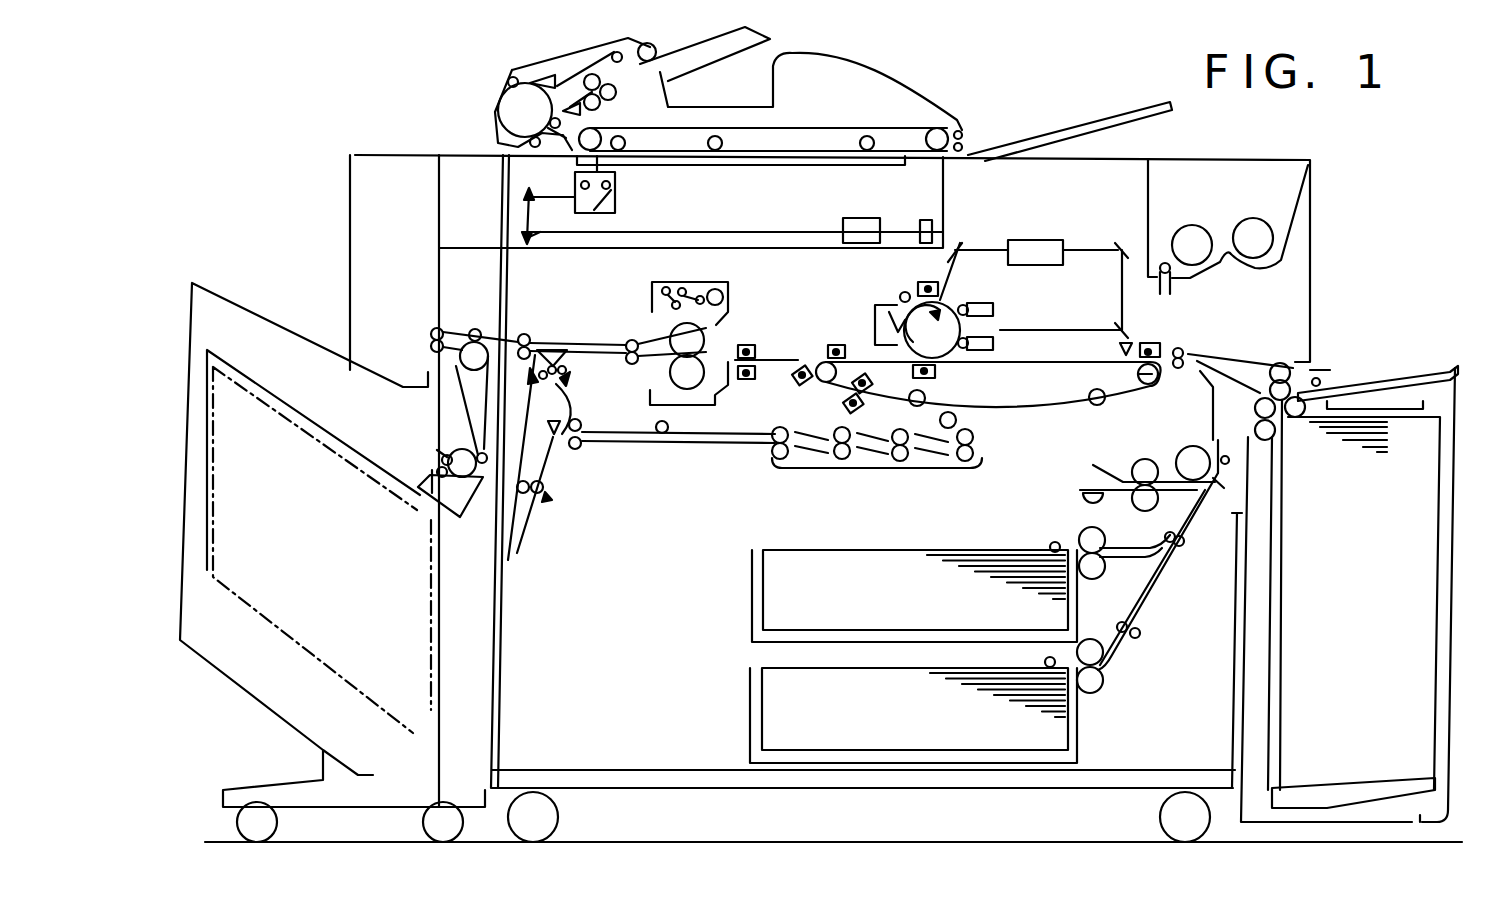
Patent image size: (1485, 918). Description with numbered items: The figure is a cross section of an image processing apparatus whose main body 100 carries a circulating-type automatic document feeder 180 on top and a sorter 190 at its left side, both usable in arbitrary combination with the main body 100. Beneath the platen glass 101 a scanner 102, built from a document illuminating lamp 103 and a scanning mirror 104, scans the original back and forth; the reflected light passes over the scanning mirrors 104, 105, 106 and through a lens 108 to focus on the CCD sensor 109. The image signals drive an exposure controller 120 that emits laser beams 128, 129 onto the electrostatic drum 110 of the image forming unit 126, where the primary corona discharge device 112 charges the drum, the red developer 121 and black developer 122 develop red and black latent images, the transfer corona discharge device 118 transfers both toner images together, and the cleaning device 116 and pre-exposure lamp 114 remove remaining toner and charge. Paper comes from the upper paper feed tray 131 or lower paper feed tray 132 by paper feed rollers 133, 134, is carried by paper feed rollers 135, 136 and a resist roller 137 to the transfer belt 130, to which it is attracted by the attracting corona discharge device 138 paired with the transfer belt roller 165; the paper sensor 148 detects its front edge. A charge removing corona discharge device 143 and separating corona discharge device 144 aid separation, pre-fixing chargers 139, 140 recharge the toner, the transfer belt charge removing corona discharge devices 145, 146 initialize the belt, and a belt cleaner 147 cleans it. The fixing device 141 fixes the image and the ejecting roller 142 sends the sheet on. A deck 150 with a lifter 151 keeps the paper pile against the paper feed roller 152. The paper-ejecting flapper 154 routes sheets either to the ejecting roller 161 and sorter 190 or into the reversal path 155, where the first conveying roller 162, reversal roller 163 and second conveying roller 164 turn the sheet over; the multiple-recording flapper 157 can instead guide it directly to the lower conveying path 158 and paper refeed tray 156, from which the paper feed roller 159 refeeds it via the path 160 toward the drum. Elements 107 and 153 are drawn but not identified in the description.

The main body of the image processing apparatus 100 is at (1309, 194).
The platen glass 101 is at (745, 166).
The scanner 102 is at (617, 195).
The document illuminating lamp 103 is at (612, 183).
The scanning mirror 104 is at (600, 208).
The scanning mirror 105 is at (528, 196).
The scanning mirror 106 is at (528, 240).
The optical system 107 is at (726, 232).
The lens 108 is at (862, 218).
The CCD sensor 109 is at (922, 220).
The electrostatic drum 110 is at (952, 303).
The primary corona discharge device 112 is at (924, 283).
The pre-exposure lamp 114 is at (900, 296).
The cleaning device 116 is at (874, 312).
The transfer corona discharge device 118 is at (937, 372).
The exposure controller 120 is at (1037, 240).
The red developer 121 is at (994, 306).
The black developer 122 is at (994, 344).
The image forming unit 126 is at (932, 330).
The laser beam 128 is at (1119, 242).
The laser beam 129 is at (968, 246).
The transfer belt 130 is at (972, 410).
The upper paper feed tray 131 is at (788, 520).
The lower paper feed tray 132 is at (1062, 735).
The paper feed roller 133 is at (1055, 542).
The paper feed roller 134 is at (1050, 657).
The paper feed roller 135 is at (1100, 533).
The paper feed roller 136 is at (1102, 640).
The resist roller 137 is at (1178, 369).
The attracting corona discharge device 138 is at (1161, 349).
The pre-fixing charger 139 is at (755, 346).
The pre-fixing charger 140 is at (747, 382).
The fixing device 141 is at (670, 283).
The ejecting roller 142 is at (583, 350).
The charge removing corona discharge device 143 is at (828, 346).
The separating corona discharge device 144 is at (806, 385).
The transfer belt charge removing corona discharge device 145 is at (862, 372).
The transfer belt charge removing corona discharge device 146 is at (862, 406).
The belt cleaner 147 is at (976, 446).
The paper sensor 148 is at (1128, 344).
The deck 150 is at (1445, 370).
The lifter 151 is at (1340, 800).
The paper feed roller 152 is at (1299, 425).
The manual feed tray 153 is at (1385, 385).
The paper-ejecting flapper 154 is at (560, 348).
The reversal path 155 is at (524, 548).
The paper refeed tray 156 is at (1065, 485).
The multiple-recording flapper 157 is at (569, 424).
The lower conveying path 158 is at (980, 482).
The paper feed roller 159 is at (1176, 455).
The path 160 is at (1214, 426).
The ejecting roller 161 is at (527, 333).
The first conveying roller 162 is at (568, 374).
The reversal roller 163 is at (545, 485).
The second conveying roller 164 is at (540, 385).
The transfer belt roller 165 is at (1126, 377).
The circulating-type automatic document feeder 180 is at (880, 80).
The sorter 190 is at (228, 296).